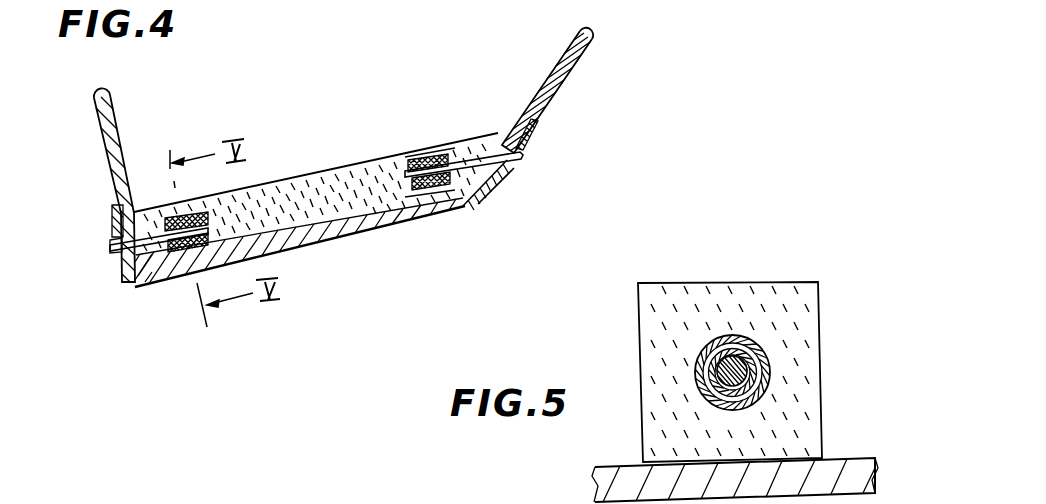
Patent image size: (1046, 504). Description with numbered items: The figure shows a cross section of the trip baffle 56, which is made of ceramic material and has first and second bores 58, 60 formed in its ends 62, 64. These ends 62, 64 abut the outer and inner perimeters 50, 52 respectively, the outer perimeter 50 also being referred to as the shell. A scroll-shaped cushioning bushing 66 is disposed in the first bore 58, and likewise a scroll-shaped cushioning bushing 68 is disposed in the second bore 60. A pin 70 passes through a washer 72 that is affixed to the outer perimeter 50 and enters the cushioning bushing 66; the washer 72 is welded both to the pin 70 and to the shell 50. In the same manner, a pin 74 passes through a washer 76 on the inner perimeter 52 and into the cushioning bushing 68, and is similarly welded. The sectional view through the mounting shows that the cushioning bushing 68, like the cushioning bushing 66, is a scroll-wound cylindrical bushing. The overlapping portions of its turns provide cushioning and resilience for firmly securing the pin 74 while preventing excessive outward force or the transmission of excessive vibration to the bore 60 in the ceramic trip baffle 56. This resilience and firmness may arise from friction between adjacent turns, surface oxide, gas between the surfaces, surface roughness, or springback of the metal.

In FIG. 4, the outer perimeter 50 is at (591, 35).
In FIG. 4, the inner perimeter 52 is at (97, 112).
In FIG. 4, the trip baffle 56 is at (338, 172).
In FIG. 5, the trip baffle 56 is at (759, 292).
In FIG. 4, the first bore 58 is at (469, 152).
In FIG. 4, the second bore 60 is at (128, 281).
In FIG. 5, the second bore 60 is at (748, 346).
In FIG. 4, the end 62 is at (502, 135).
In FIG. 4, the end 64 is at (112, 216).
In FIG. 4, the cushioning bushing 66 is at (448, 156).
In FIG. 4, the cushioning bushing 68 is at (167, 257).
In FIG. 5, the cushioning bushing 68 is at (745, 370).
In FIG. 4, the pin 70 is at (523, 156).
In FIG. 4, the washer 72 is at (539, 127).
In FIG. 4, the pin 74 is at (114, 257).
In FIG. 5, the pin 74 is at (713, 367).
In FIG. 4, the washer 76 is at (114, 229).